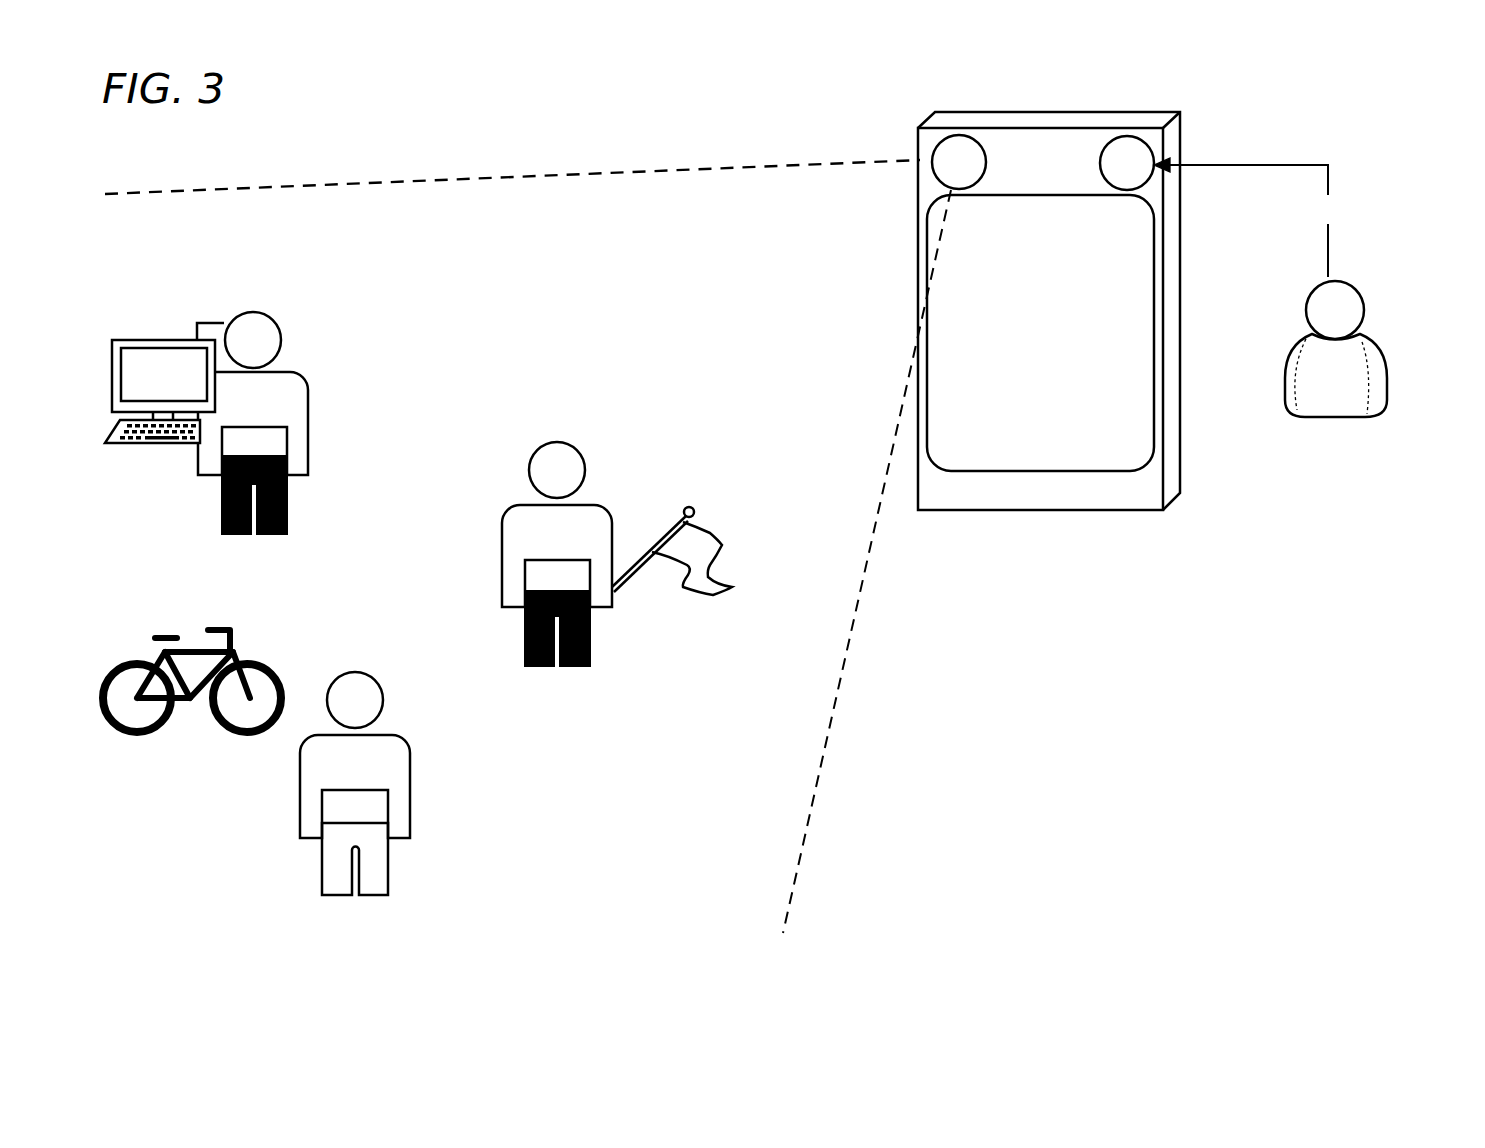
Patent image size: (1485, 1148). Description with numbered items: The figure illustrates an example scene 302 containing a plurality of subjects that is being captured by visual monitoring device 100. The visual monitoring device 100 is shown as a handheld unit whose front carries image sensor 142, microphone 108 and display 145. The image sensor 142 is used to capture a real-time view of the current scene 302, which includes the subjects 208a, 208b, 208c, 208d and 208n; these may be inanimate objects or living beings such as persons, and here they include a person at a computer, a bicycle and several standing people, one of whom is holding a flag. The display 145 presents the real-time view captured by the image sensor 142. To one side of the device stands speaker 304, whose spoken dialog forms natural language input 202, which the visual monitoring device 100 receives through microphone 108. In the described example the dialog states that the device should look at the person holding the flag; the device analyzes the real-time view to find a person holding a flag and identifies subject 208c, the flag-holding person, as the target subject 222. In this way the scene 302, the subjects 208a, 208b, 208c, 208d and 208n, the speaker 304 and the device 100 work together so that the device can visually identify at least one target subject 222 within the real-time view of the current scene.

The visual monitoring device 100 is at (1059, 160).
The microphone 108 is at (1145, 174).
The image sensor 142 is at (977, 173).
The display 145 is at (1060, 347).
The natural language input 202 is at (1470, 218).
The subject 208a is at (277, 420).
The subject 208b is at (180, 481).
The subject 208c is at (581, 550).
The subject 208d is at (310, 641).
The subject 208n is at (378, 780).
The target subject 222 is at (813, 716).
The scene 302 is at (298, 230).
The speaker 304 is at (1370, 418).